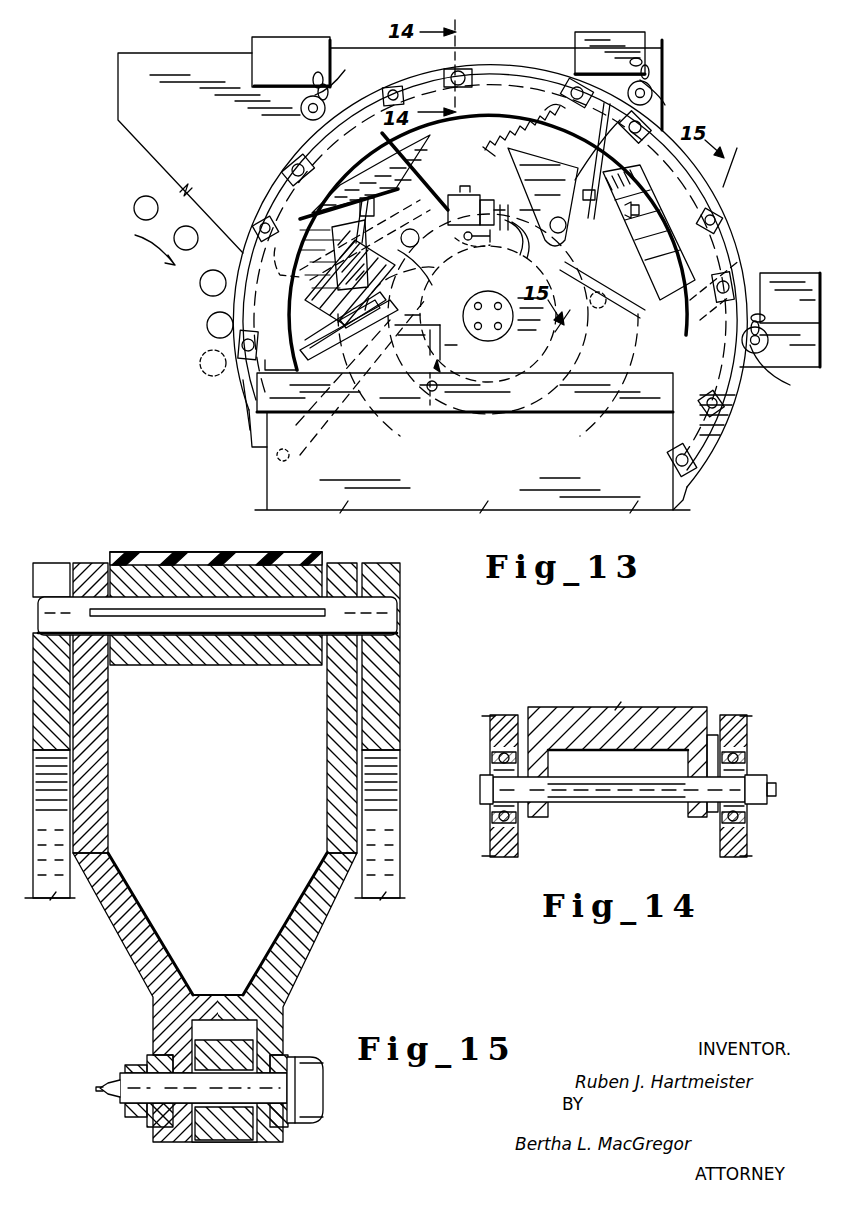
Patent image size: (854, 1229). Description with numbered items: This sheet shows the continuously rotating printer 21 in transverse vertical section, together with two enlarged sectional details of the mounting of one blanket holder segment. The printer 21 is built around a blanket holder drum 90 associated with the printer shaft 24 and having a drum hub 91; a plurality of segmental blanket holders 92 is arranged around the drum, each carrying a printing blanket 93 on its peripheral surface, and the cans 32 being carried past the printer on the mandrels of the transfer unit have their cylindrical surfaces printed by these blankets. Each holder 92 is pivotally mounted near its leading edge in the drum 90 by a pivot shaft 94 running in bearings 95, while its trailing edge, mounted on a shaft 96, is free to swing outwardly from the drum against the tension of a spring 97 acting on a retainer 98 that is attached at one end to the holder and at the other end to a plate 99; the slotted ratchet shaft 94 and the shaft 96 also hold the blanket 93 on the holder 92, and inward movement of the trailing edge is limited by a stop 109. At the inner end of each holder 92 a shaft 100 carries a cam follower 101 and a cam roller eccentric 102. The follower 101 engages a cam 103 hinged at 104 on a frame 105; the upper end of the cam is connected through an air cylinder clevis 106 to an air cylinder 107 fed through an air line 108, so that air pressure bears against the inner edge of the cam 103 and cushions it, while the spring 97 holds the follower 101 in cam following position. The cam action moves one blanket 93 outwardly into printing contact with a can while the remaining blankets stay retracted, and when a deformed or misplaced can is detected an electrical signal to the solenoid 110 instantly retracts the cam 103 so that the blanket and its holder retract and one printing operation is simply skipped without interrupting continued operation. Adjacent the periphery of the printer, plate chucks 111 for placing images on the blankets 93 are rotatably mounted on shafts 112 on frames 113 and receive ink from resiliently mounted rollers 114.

In FIG. 13, the printer 21 is at (238, 400).
In FIG. 13, the printer shaft 24 is at (480, 333).
In FIG. 13, the bales / pellets 32 is at (146, 222).
In FIG. 13, the blanket holder drum 90 is at (718, 245).
In FIG. 14, the blanket holder drum 90 is at (490, 732).
In FIG. 15, the blanket holder drum 90 is at (388, 690).
In FIG. 13, the drum hub 91 is at (546, 202).
In FIG. 13, the blanket holders 92 is at (497, 90).
In FIG. 14, the blanket holders 92 is at (635, 712).
In FIG. 15, the blanket holders 92 is at (330, 718).
In FIG. 13, the printing blankets 93 is at (478, 72).
In FIG. 15, the printing blankets 93 is at (182, 552).
In FIG. 13, the pivot shaft 94 is at (450, 72).
In FIG. 14, the pivot shaft 94 is at (652, 798).
In FIG. 14, the bearings 95 is at (492, 772).
In FIG. 13, the shaft 96 is at (392, 88).
In FIG. 15, the shaft 96 is at (228, 600).
In FIG. 13, the spring 97 is at (658, 190).
In FIG. 13, the retainer 98 is at (362, 222).
In FIG. 13, the plate 99 is at (598, 170).
In FIG. 13, the shaft 100 is at (428, 260).
In FIG. 15, the shaft 100 is at (305, 1086).
In FIG. 15, the cam follower 101 is at (232, 1122).
In FIG. 15, the cam roller eccentric 102 is at (152, 1060).
In FIG. 13, the cam 103 is at (362, 347).
In FIG. 13, the hinge mounting 104 is at (431, 406).
In FIG. 13, the frame 105 is at (472, 426).
In FIG. 13, the air cylinder clevis 106 is at (446, 213).
In FIG. 13, the air cylinder 107 is at (468, 248).
In FIG. 13, the air line 108 is at (505, 258).
In FIG. 15, the stop 109 is at (398, 640).
In FIG. 13, the solenoid 110 is at (458, 205).
In FIG. 13, the plate chucks 111 is at (695, 95).
In FIG. 13, the shafts 112 is at (302, 104).
In FIG. 13, the frames 113 is at (805, 390).
In FIG. 13, the resiliently mounted rollers 114 is at (325, 75).